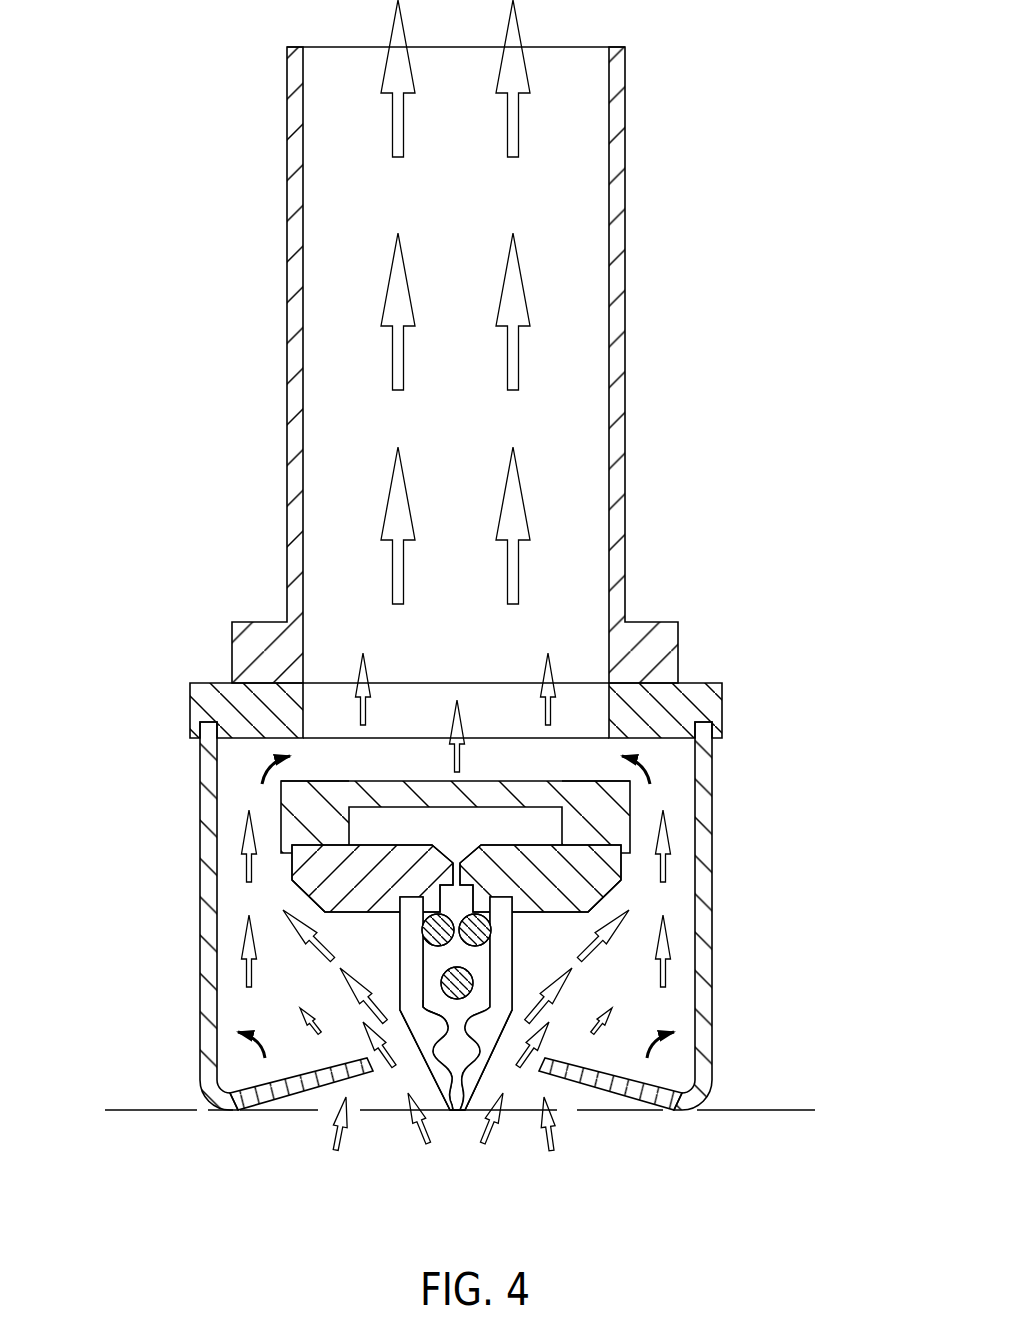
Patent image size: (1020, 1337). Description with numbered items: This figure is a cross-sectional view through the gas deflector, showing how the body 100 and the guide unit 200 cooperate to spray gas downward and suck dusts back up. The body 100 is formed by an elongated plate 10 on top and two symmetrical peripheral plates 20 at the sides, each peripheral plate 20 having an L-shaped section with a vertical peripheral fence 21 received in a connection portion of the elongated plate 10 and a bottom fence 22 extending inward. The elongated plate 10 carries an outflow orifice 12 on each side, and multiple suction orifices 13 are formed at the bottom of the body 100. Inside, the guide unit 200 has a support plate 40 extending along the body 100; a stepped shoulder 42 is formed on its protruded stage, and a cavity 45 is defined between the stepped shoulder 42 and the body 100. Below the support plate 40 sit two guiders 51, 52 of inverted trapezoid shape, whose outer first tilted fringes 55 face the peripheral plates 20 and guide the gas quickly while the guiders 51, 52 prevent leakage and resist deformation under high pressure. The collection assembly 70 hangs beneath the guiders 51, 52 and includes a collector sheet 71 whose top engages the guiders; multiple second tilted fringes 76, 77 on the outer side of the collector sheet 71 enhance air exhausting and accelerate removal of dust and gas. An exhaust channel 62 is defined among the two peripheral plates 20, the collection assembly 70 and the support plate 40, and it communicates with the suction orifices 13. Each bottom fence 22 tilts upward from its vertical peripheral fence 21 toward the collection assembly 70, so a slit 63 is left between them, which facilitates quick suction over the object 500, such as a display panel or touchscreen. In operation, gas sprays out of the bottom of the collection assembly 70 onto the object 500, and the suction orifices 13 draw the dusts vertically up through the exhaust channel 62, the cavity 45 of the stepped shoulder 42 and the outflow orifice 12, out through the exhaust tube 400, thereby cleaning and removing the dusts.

The exhaust tube 400 is at (632, 220).
The body 100 is at (405, 656).
The elongated plate 10 is at (702, 682).
The outflow orifice 12 is at (528, 705).
The peripheral plate 20 is at (425, 916).
The vertical peripheral fence 21 is at (703, 1038).
The bottom fence 22 is at (632, 1082).
The support plate 40 is at (461, 708).
The cavity 45 is at (322, 772).
The stepped shoulder 42 is at (580, 780).
The guider 51 is at (318, 872).
The guider 52 is at (590, 873).
The first tilted fringe 55 is at (300, 897).
The collection assembly 70 is at (391, 1053).
The collector sheet 71 is at (410, 1007).
The second tilted fringe 76 is at (433, 1125).
The second tilted fringe 77 is at (408, 1052).
The guide unit 200 is at (545, 935).
The exhaust channel 62 is at (610, 1000).
The slit 63 is at (567, 1097).
The suction orifice 13 is at (387, 1073).
The object 500 is at (135, 1108).